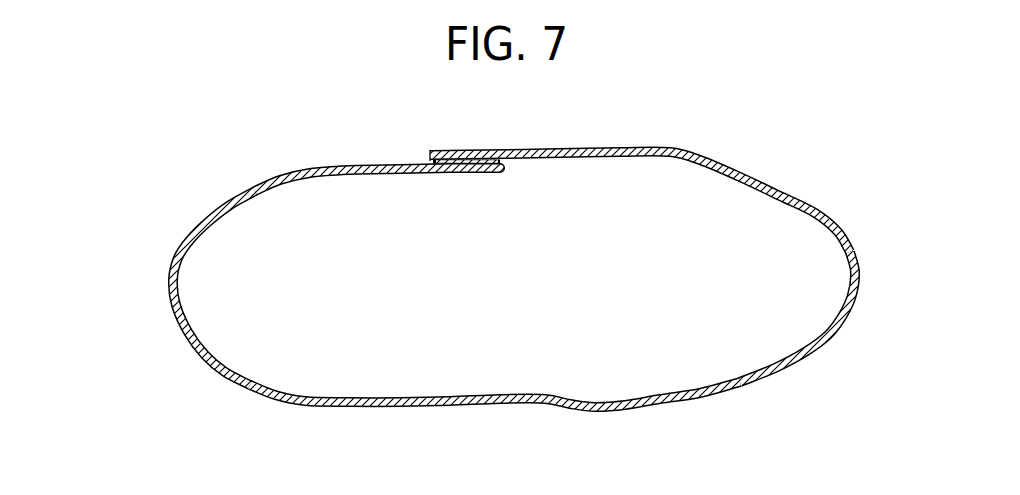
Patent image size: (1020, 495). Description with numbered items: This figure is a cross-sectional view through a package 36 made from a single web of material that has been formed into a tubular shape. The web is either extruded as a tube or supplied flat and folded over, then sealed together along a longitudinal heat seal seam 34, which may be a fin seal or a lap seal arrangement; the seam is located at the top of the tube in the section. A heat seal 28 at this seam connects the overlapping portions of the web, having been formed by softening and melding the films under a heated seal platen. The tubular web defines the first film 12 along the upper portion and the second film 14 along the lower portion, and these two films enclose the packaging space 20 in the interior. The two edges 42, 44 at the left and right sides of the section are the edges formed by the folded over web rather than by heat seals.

The first film 12 is at (617, 150).
The second film 14 is at (493, 404).
The packaging space 20 is at (523, 291).
The heat seal 28 is at (470, 150).
The longitudinal heat seal seam 34 is at (470, 150).
The package 36 is at (305, 130).
The edge 42 is at (859, 282).
The edge 44 is at (169, 283).